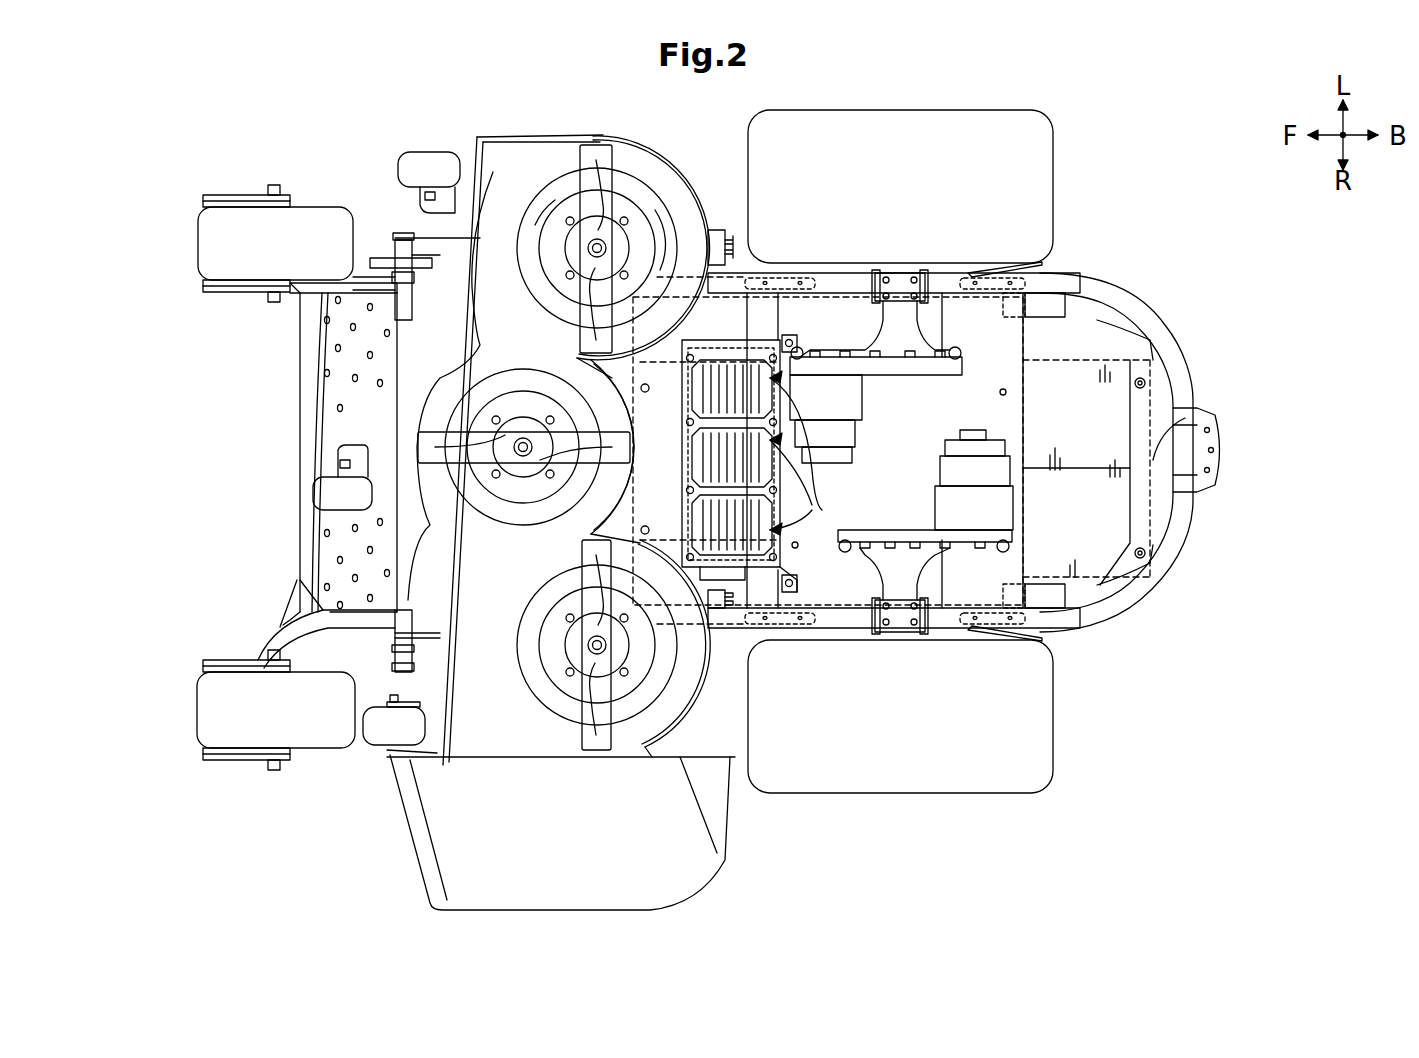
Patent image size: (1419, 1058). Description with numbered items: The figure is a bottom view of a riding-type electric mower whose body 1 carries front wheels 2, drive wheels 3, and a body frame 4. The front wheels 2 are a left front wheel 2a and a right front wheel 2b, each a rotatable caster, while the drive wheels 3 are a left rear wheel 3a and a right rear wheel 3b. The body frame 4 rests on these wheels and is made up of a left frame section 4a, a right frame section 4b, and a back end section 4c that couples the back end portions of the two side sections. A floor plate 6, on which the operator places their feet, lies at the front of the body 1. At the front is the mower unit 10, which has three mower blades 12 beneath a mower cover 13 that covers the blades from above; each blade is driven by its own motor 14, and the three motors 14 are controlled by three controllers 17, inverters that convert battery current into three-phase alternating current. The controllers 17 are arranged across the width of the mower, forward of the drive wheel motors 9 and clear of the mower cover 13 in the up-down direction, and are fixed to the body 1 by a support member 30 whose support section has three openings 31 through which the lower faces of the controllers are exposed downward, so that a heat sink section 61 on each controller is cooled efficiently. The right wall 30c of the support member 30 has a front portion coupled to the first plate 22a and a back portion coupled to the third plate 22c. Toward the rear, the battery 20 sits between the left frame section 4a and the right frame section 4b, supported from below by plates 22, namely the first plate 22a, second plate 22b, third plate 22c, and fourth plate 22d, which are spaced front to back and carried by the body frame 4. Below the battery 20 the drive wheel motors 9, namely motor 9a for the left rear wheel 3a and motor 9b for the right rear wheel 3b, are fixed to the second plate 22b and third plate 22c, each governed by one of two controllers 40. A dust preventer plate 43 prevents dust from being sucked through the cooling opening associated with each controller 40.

The body 1 is at (690, 490).
The front wheels 2 is at (225, 477).
The left front wheel 2a is at (212, 233).
The right front wheel 2b is at (212, 728).
The drive wheels 3 is at (960, 455).
The left rear wheel 3a is at (1053, 133).
The right rear wheel 3b is at (1053, 782).
The body frame 4 is at (996, 452).
The left frame section 4a is at (935, 273).
The right frame section 4b is at (940, 618).
The back end section 4c is at (1193, 388).
The floor plate 6 is at (355, 395).
The drive wheel motors 9 is at (901, 455).
The motor 9a is at (890, 340).
The motor 9b is at (920, 560).
The mower unit 10 is at (561, 490).
The mower blades 12 is at (606, 160).
The mower cover 13 is at (548, 132).
The motors 14 is at (568, 258).
The controllers 17 is at (811, 453).
The battery 20 is at (1212, 445).
The plates 22 is at (1012, 523).
The first plate 22a is at (752, 602).
The second plate 22b is at (1033, 418).
The third plate 22c is at (855, 590).
The fourth plate 22d is at (1170, 498).
The support member 30 is at (749, 411).
The right wall 30c is at (792, 580).
The openings 31 is at (720, 461).
The controllers 40 is at (1048, 300).
The dust preventer plate 43 is at (1015, 266).
The heat sink section 61 is at (707, 392).